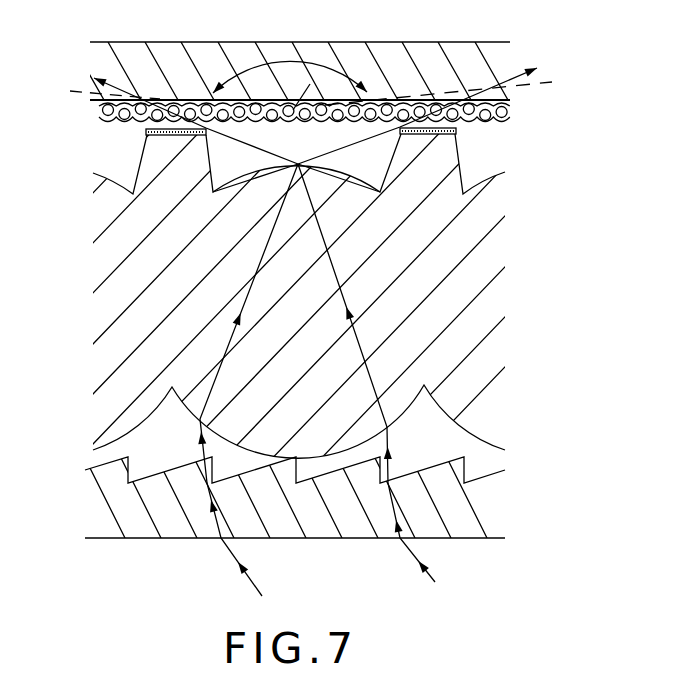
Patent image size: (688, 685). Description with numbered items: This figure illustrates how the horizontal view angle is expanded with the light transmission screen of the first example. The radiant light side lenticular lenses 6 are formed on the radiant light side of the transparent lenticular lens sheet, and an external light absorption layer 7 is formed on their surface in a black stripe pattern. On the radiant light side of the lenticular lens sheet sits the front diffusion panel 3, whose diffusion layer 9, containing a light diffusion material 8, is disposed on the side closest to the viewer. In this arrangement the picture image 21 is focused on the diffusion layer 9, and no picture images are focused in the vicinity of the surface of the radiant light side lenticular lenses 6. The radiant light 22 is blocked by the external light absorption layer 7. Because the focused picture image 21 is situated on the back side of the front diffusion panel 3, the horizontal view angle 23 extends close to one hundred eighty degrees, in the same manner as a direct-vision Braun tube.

The front diffusion panel 3 is at (428, 52).
The radiant light side lenticular lenses 6 is at (334, 176).
The external light absorption layer 7 is at (457, 130).
The light diffusion material 8 is at (507, 116).
The diffusion layer 9 is at (507, 110).
The picture image 21 is at (310, 84).
The radiant light 22 is at (314, 121).
The horizontal view angle 23 is at (269, 62).